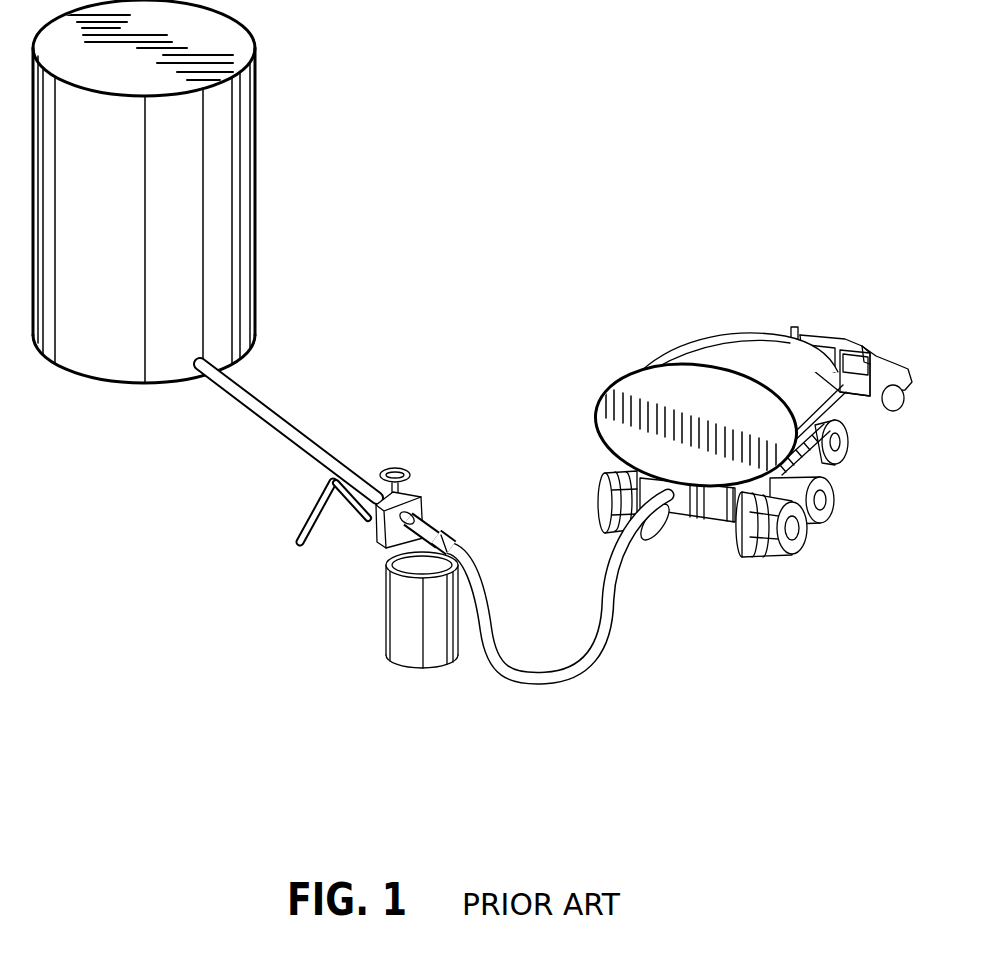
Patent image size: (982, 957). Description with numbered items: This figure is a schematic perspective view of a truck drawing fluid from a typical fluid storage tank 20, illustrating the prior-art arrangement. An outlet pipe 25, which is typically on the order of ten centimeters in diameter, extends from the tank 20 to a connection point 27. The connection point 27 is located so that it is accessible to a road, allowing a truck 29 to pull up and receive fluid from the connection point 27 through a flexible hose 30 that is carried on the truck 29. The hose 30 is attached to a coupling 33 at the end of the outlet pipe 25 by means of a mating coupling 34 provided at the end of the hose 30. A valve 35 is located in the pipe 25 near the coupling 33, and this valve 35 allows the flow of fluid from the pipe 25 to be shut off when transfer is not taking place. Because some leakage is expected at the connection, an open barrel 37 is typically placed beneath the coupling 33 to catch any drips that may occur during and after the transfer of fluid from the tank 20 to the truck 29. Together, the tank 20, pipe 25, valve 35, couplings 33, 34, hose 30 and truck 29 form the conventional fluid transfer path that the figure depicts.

The fluid storage tank 20 is at (298, 163).
The outlet pipe 25 is at (278, 425).
The connection point 27 is at (490, 453).
The truck 29 is at (722, 358).
The flexible hose 30 is at (606, 636).
The coupling 33 is at (411, 513).
The mating coupling 34 is at (450, 548).
The valve 35 is at (413, 493).
The open barrel 37 is at (402, 608).